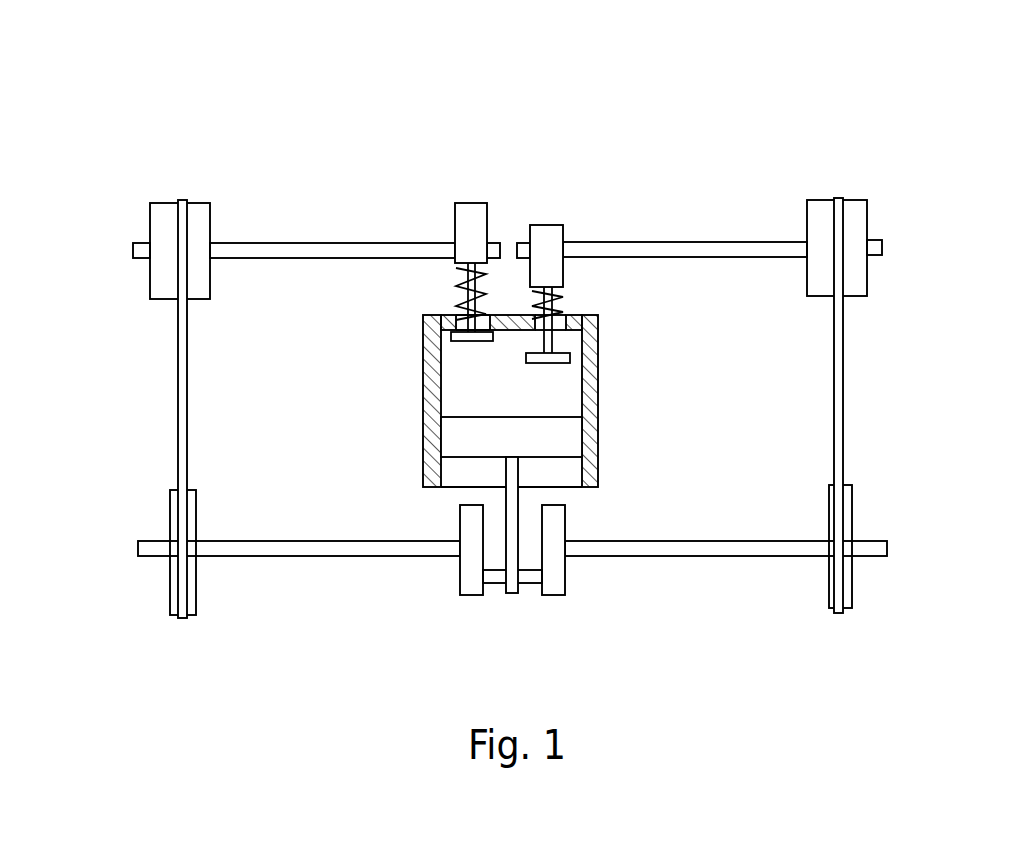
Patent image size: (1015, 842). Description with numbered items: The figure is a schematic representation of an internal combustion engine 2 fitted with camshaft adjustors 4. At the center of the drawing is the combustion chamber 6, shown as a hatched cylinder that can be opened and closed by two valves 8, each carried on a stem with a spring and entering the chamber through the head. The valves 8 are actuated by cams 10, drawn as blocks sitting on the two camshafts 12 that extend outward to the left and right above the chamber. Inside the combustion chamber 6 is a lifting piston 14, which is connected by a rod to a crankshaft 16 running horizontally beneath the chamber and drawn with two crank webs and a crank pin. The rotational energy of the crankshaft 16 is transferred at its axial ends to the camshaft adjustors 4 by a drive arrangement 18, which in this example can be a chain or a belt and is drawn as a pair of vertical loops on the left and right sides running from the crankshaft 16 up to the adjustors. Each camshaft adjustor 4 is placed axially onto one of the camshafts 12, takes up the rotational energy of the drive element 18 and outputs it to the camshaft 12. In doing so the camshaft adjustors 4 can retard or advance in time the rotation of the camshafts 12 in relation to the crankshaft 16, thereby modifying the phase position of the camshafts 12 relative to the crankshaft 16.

The internal combustion engine 2 is at (933, 122).
The camshaft adjustor 4 is at (163, 213).
The combustion chamber 6 is at (593, 392).
The valve 8 is at (465, 293).
The cam 10 is at (465, 215).
The camshaft 12 is at (330, 248).
The lifting piston 14 is at (570, 437).
The crankshaft 16 is at (682, 542).
The drive arrangement 18 is at (186, 387).